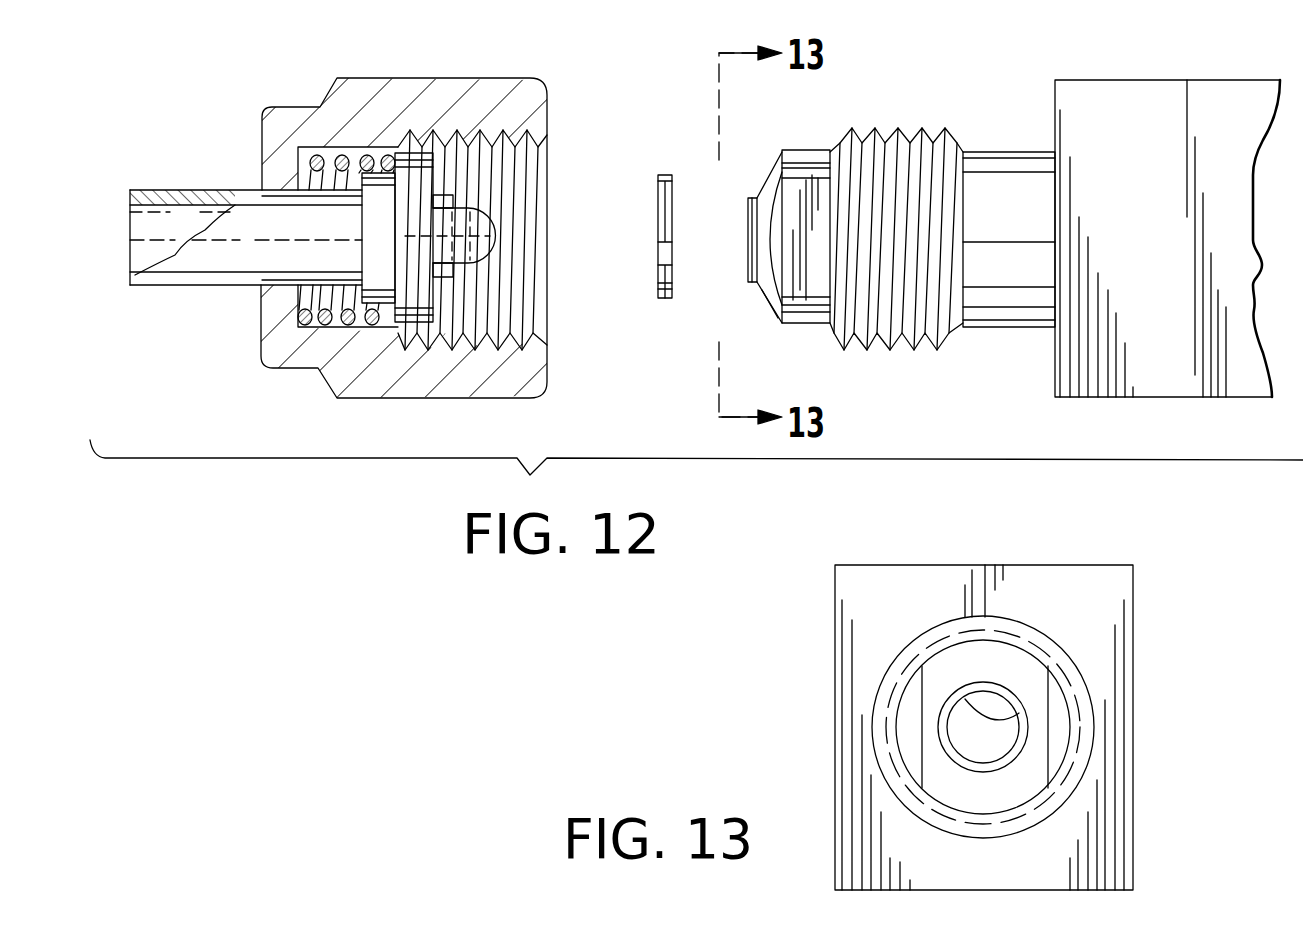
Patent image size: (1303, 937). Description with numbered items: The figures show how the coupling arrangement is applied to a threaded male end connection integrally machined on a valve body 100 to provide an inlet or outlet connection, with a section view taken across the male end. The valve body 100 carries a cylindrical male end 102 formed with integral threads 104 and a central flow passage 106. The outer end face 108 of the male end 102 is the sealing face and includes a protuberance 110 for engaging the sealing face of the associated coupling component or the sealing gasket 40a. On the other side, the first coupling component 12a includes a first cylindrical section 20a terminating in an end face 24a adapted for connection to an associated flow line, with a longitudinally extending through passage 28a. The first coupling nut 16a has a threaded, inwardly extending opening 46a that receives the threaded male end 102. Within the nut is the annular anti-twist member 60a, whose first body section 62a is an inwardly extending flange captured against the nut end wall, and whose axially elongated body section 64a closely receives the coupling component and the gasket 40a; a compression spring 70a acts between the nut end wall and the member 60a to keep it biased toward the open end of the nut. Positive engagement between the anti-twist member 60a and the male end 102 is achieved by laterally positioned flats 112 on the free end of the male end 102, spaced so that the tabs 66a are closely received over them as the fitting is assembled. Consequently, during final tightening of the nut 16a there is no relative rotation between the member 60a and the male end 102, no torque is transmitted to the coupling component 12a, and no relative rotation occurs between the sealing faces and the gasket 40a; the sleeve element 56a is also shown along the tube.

In FIG. 12, the first coupling component 12a is at (158, 180).
In FIG. 12, the first coupling nut 16a is at (290, 380).
In FIG. 12, the first cylindrical section 20a is at (193, 273).
In FIG. 12, the first end face 24a is at (127, 278).
In FIG. 12, the through passage 28a is at (155, 226).
In FIG. 12, the sealing gasket 40a is at (657, 212).
In FIG. 12, the threaded opening 46a is at (533, 322).
In FIG. 12, the sleeve 56a is at (277, 195).
In FIG. 12, the anti-twist member 60a is at (411, 150).
In FIG. 12, the first body section 62a is at (373, 230).
In FIG. 12, the axially elongated body section 64a is at (372, 305).
In FIG. 12, the tabs 66a is at (473, 227).
In FIG. 12, the compression spring 70a is at (313, 157).
In FIG. 12, the valve body 100 is at (1108, 385).
In FIG. 13, the valve body 100 is at (1135, 715).
In FIG. 12, the cylindrical male end 102 is at (987, 328).
In FIG. 13, the cylindrical male end 102 is at (925, 660).
In FIG. 12, the threads 104 is at (900, 343).
In FIG. 13, the threads 104 is at (1055, 800).
In FIG. 13, the central flow passage 106 is at (1010, 715).
In FIG. 12, the outer end face 108 is at (767, 307).
In FIG. 12, the protuberance 110 is at (748, 223).
In FIG. 12, the flats 112 is at (787, 253).
In FIG. 13, the flats 112 is at (918, 714).